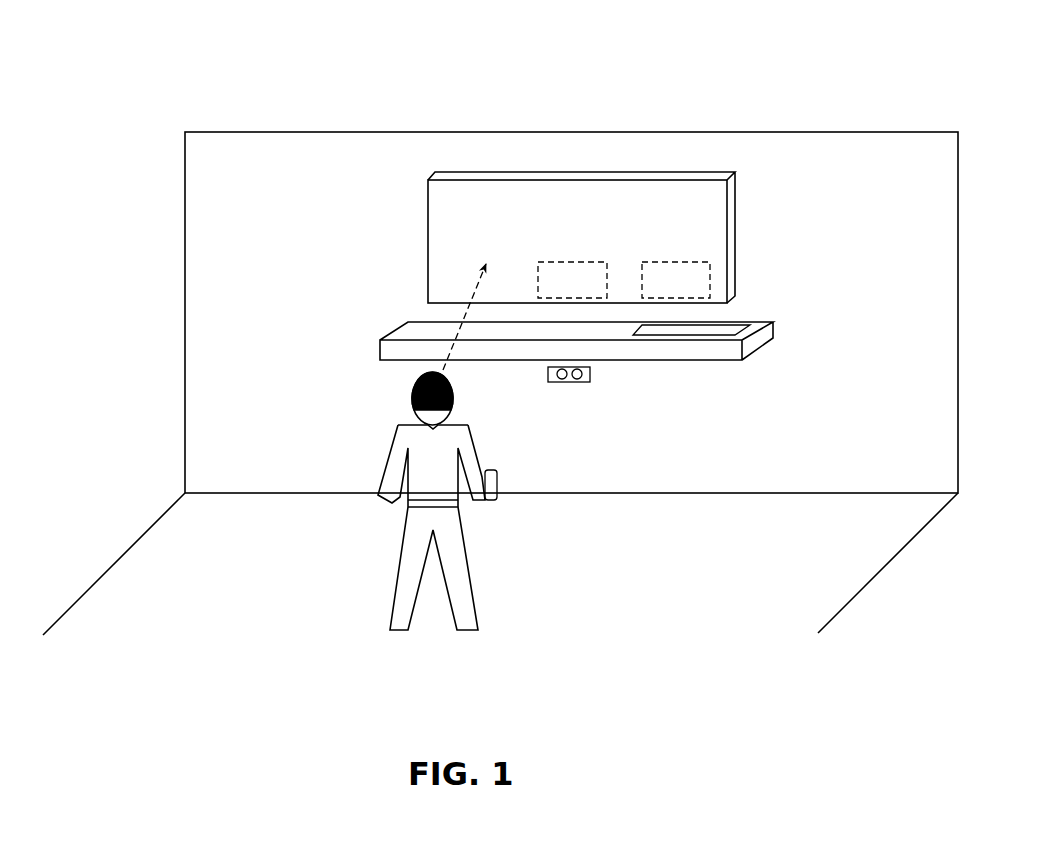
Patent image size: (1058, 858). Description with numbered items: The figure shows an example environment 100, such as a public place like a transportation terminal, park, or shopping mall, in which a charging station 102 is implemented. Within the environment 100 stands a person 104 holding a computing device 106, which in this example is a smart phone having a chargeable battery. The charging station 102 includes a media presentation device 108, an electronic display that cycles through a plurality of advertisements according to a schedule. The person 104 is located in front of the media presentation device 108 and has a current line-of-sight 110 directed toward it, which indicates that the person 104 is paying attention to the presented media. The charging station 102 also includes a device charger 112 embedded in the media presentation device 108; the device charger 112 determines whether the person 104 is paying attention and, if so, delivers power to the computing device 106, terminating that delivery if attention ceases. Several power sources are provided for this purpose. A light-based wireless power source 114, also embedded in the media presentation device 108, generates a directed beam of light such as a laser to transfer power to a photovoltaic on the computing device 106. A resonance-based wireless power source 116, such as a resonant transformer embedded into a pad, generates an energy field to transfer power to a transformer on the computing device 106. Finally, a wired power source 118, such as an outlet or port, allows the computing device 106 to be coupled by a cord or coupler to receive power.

The environment 100 is at (136, 96).
The charging station 102 is at (755, 254).
The person 104 is at (393, 603).
The computing device 106 is at (492, 500).
The media presentation device 108 is at (508, 171).
The line-of-sight 110 is at (443, 370).
The device charger 112 is at (676, 280).
The light-based wireless power source 114 is at (572, 280).
The resonance-based wireless power source 116 is at (690, 335).
The wired power source 118 is at (572, 382).